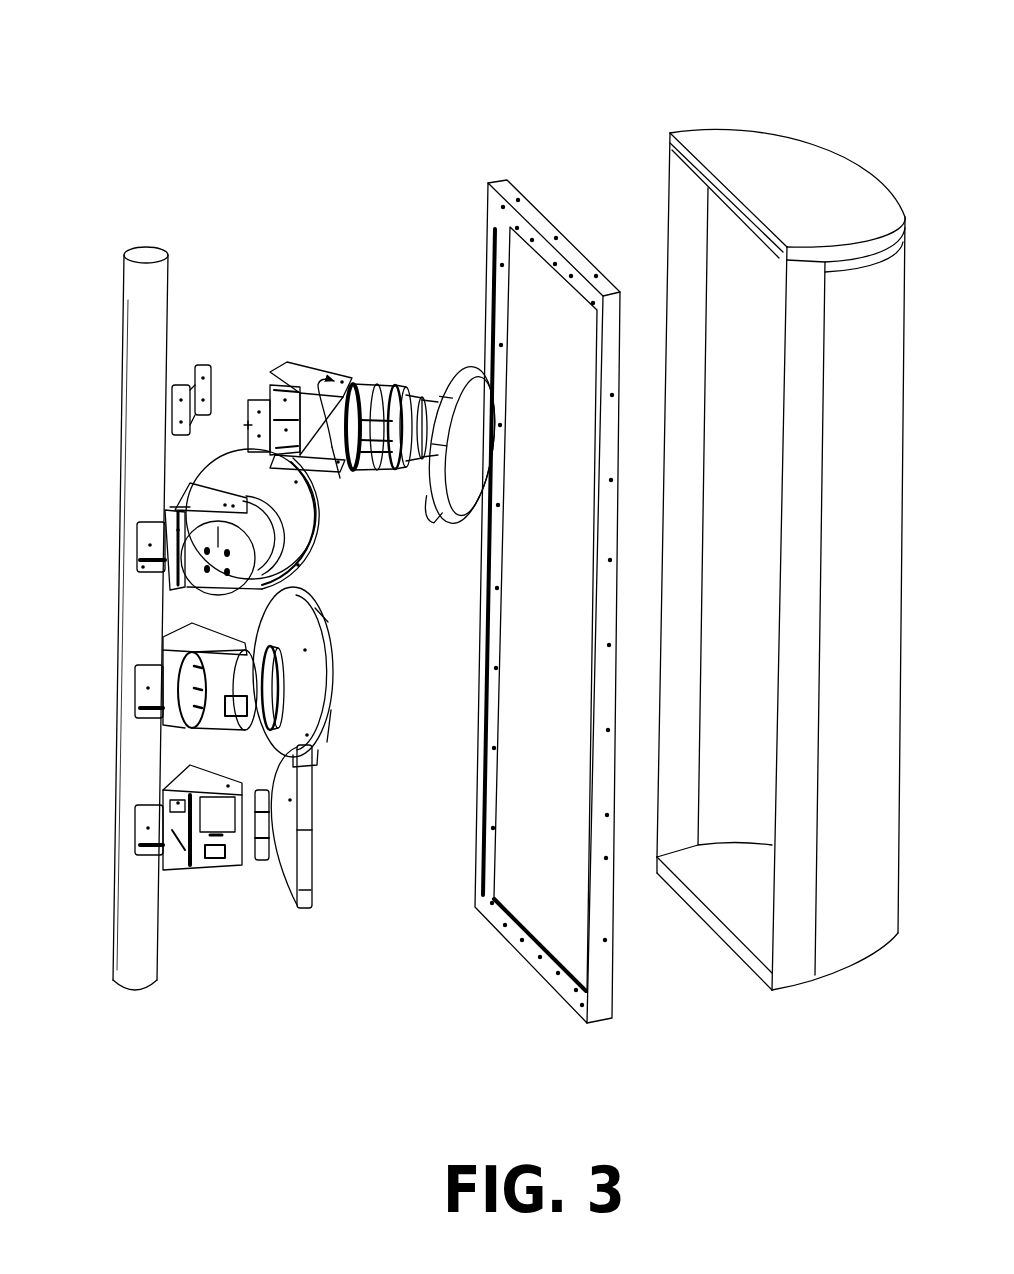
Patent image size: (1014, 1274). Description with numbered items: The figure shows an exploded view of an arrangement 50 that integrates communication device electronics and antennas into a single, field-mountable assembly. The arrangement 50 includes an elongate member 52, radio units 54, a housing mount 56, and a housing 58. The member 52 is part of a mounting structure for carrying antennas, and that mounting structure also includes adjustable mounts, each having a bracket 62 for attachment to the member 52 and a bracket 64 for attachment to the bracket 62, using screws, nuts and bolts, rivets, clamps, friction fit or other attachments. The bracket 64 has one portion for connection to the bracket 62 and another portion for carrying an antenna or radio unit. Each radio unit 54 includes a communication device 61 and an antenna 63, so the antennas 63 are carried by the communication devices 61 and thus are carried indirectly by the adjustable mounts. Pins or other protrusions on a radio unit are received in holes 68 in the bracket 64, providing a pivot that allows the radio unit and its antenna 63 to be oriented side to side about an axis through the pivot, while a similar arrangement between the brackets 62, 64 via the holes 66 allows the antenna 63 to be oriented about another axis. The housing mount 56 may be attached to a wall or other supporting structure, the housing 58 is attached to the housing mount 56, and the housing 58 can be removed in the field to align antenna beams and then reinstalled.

The arrangement 50 is at (150, 70).
The elongate member 52 is at (150, 252).
The radio units 54 is at (480, 338).
The housing mount 56 is at (537, 215).
The housing 58 is at (790, 170).
The communication device 61 is at (385, 408).
The bracket 62 is at (186, 395).
The antenna 63 is at (458, 478).
The bracket 64 is at (305, 372).
The holes 66 is at (248, 425).
The holes 68 is at (332, 447).